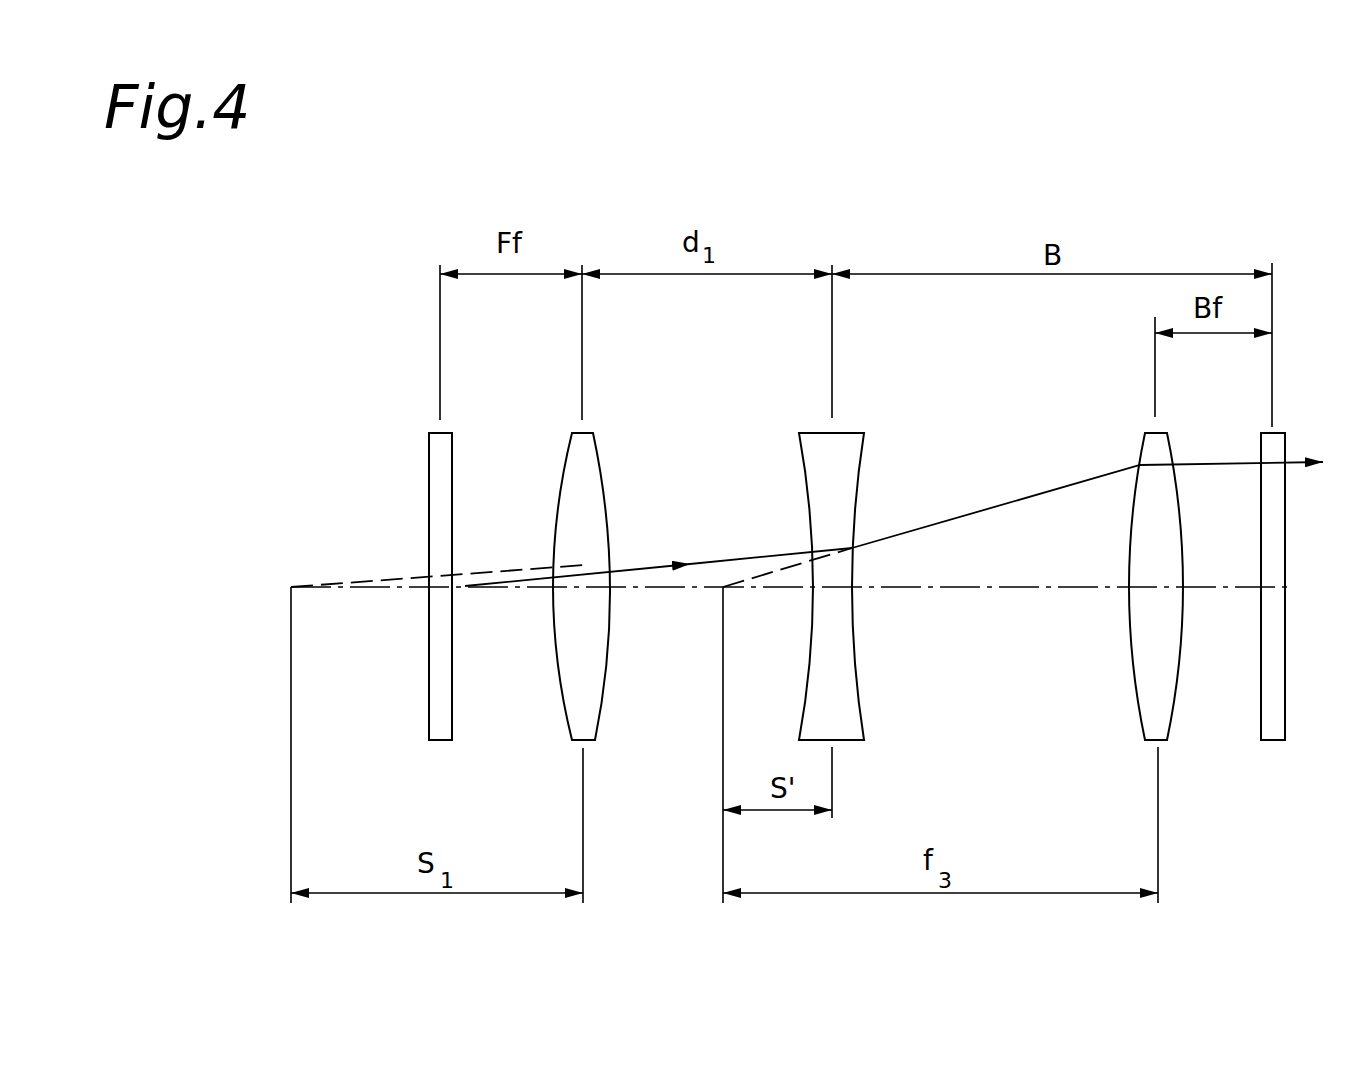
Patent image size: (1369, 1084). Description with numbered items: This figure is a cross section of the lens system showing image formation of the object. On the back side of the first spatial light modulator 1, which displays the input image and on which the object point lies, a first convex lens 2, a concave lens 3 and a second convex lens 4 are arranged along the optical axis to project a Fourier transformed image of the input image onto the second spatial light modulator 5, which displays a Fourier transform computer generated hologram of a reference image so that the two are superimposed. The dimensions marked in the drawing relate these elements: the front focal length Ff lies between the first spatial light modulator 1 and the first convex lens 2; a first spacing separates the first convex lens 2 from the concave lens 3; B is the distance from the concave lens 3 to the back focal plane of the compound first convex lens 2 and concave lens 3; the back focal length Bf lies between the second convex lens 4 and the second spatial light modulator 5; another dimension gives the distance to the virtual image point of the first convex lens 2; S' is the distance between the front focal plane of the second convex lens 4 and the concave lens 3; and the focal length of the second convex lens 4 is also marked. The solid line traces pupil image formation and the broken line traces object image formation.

The first spatial light modulator 1 is at (430, 432).
The first convex lens 2 is at (572, 432).
The concave lens 3 is at (815, 432).
The second convex lens 4 is at (1165, 742).
The second spatial light modulator 5 is at (1275, 431).